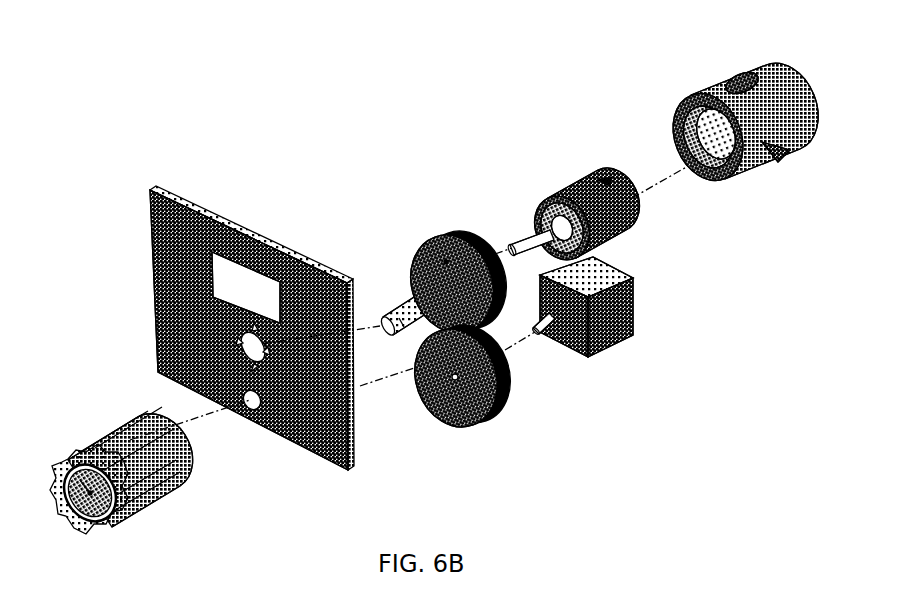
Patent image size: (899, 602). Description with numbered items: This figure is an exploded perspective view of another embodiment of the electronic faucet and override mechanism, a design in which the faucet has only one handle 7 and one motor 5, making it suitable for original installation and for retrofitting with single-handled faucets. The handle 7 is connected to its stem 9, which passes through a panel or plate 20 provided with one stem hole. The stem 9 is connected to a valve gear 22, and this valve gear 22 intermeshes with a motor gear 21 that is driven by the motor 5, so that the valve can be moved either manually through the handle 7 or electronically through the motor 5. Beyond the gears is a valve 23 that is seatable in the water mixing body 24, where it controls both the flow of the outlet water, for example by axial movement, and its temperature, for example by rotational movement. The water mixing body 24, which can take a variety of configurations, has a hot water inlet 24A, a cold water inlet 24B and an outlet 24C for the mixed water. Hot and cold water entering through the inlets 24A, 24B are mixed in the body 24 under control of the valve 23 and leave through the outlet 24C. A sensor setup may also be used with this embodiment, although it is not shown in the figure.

The motor 5 is at (617, 312).
The handle 7 is at (63, 447).
The stem 9 is at (425, 295).
The panel or plate 20 is at (172, 250).
The motor gear 21 is at (490, 429).
The valve gear 22 is at (446, 262).
The valve 23 is at (598, 189).
The water mixing body 24 is at (714, 98).
The hot water inlet 24A is at (700, 108).
The cold water inlet 24B is at (788, 148).
The outlet 24C is at (740, 78).